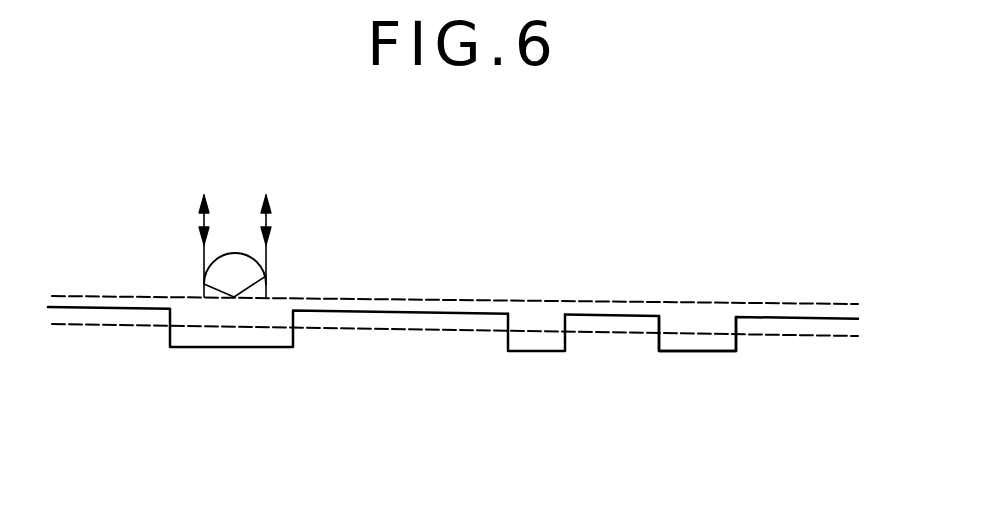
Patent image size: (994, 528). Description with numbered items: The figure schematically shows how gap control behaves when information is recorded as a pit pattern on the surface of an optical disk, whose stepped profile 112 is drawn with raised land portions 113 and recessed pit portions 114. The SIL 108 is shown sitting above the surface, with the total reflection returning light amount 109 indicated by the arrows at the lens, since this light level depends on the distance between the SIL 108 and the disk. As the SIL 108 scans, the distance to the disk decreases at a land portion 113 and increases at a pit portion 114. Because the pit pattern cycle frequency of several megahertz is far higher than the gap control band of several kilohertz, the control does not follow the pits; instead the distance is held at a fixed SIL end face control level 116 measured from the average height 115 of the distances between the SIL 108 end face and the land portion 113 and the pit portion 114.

The SIL 108 is at (262, 278).
The total reflection returning light amount 109 is at (237, 186).
The substrate 112 is at (788, 383).
The land portion 113 is at (488, 294).
The pit portion 114 is at (537, 358).
The average height 115 is at (110, 341).
The SIL end face control level 116 is at (700, 289).